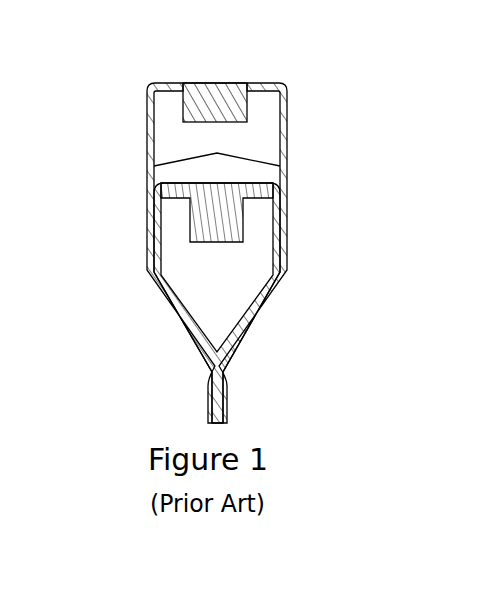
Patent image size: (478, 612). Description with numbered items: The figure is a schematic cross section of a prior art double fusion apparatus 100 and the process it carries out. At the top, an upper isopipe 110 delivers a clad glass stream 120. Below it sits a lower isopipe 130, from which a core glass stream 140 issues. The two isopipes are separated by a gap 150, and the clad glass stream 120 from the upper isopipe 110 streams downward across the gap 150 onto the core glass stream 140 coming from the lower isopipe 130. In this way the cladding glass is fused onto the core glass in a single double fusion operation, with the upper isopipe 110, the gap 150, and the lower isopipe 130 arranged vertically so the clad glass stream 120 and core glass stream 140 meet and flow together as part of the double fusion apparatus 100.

The double fusion apparatus 100 is at (254, 236).
The upper isopipe 110 is at (266, 133).
The clad glass stream 120 is at (214, 92).
The lower isopipe 130 is at (258, 246).
The core glass stream 140 is at (237, 191).
The gap 150 is at (137, 163).